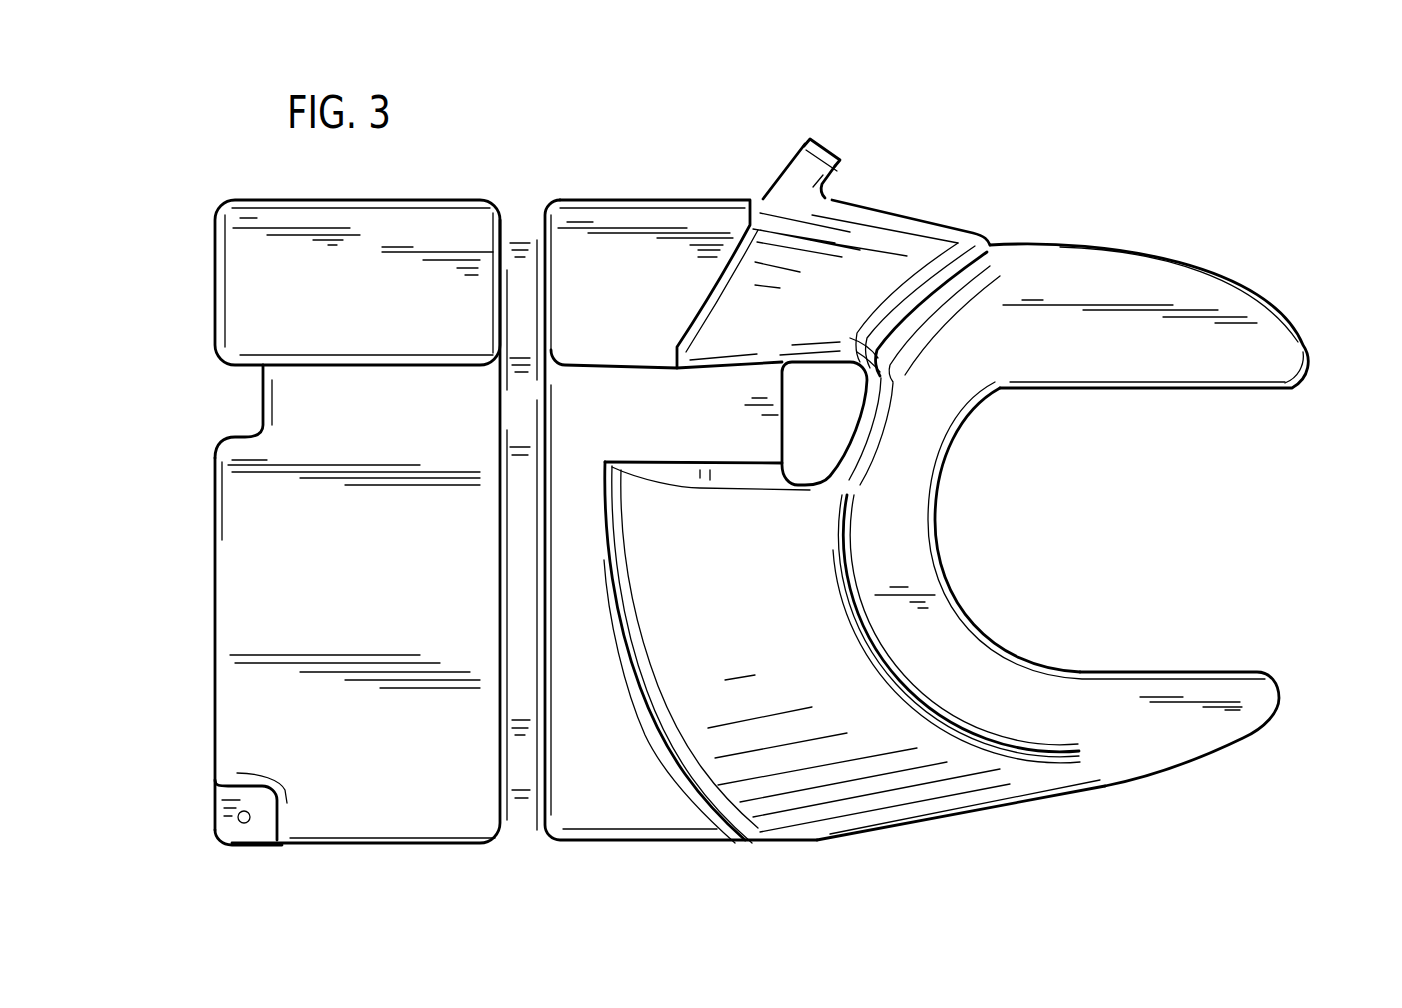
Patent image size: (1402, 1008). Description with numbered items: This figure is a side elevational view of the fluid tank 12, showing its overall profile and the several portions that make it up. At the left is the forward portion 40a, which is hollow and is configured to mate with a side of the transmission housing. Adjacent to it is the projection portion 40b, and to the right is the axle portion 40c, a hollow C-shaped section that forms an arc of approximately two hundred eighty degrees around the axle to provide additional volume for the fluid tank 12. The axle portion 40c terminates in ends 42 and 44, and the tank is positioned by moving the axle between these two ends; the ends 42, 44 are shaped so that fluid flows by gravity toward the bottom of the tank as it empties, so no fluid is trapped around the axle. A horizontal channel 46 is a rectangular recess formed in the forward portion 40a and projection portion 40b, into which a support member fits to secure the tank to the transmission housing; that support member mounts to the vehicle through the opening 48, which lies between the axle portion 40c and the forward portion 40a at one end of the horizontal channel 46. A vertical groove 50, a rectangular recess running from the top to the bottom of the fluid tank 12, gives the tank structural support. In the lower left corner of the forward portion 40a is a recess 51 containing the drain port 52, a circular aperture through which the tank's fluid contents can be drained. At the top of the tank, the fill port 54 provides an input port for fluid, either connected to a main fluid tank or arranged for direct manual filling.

The fluid tank 12 is at (706, 114).
The forward portion 40a is at (420, 198).
The projection portion 40b is at (937, 815).
The axle portion 40c is at (1180, 261).
The end 42 is at (1298, 337).
The end 44 is at (1230, 748).
The horizontal channel 46 is at (263, 368).
The opening 48 is at (822, 363).
The vertical groove 50 is at (522, 220).
The recess 51 is at (220, 797).
The drain port 52 is at (243, 824).
The fill port 54 is at (830, 157).